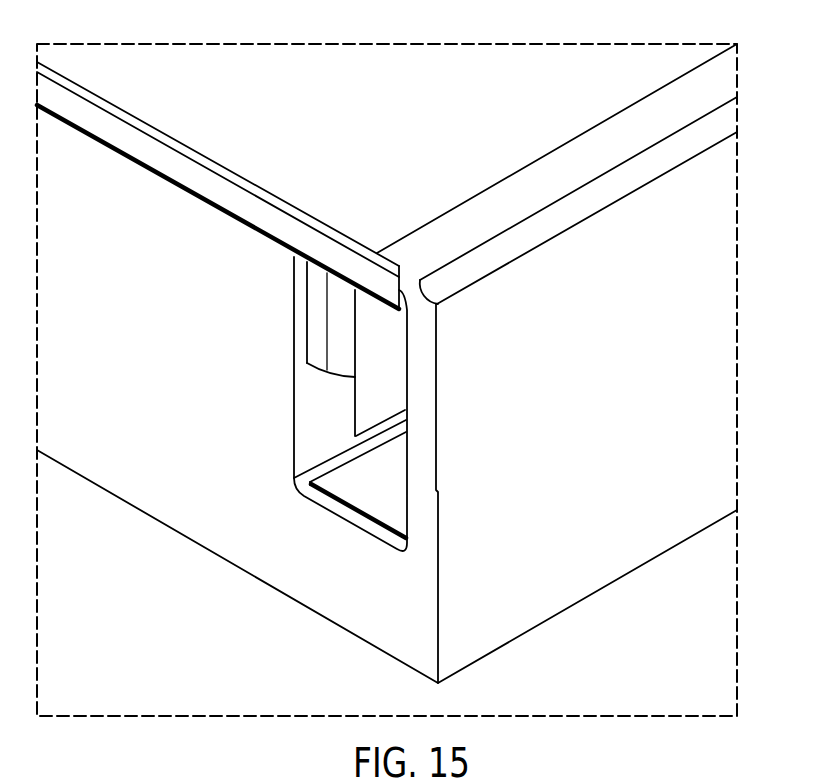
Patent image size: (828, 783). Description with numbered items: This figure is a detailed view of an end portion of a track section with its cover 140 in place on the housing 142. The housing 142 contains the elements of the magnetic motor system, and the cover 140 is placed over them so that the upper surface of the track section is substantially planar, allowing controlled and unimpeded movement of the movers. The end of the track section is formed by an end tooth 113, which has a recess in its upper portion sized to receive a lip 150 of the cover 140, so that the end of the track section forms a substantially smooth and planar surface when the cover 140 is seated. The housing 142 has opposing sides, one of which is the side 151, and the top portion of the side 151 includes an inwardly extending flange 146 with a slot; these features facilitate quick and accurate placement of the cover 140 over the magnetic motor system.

The end tooth 113 is at (302, 295).
The cover 140 is at (409, 137).
The housing 142 is at (583, 565).
The inwardly extending flange 146 is at (401, 251).
The lip 150 is at (378, 290).
The side 151 is at (421, 468).